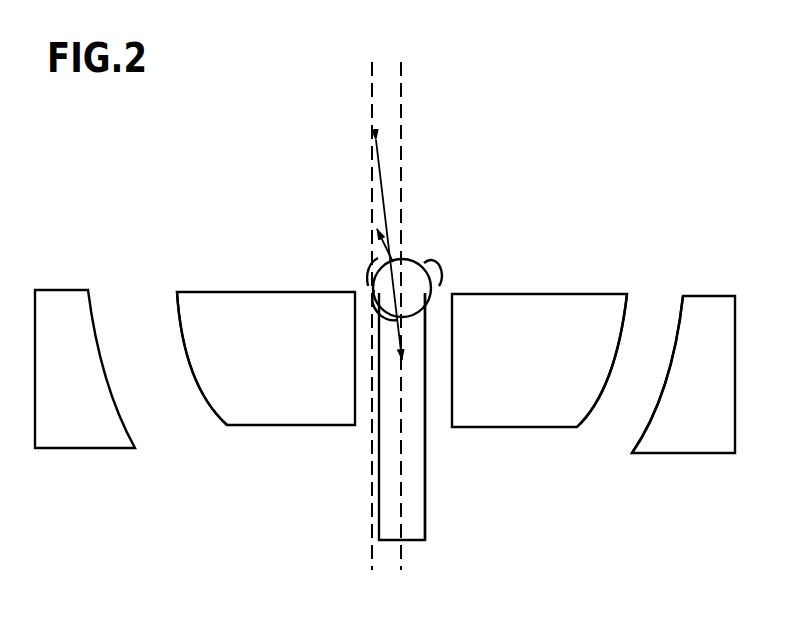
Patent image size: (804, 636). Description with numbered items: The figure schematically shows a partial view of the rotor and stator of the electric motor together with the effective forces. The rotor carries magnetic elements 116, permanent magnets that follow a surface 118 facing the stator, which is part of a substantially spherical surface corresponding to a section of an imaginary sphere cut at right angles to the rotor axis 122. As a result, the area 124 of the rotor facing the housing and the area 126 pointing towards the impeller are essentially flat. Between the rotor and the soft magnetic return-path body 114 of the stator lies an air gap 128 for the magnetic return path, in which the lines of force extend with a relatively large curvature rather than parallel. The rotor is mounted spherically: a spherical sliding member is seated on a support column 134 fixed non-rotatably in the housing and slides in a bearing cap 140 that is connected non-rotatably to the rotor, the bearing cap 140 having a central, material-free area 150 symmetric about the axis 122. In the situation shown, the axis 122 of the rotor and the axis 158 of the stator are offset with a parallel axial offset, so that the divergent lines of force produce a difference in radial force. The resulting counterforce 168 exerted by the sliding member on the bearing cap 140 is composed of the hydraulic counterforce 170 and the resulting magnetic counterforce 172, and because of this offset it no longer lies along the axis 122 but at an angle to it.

The return-path body 114 is at (712, 437).
The magnetic element 116 is at (527, 400).
The surface 118 is at (627, 318).
The axis 122 is at (402, 555).
The area 124 is at (310, 427).
The area 126 is at (196, 300).
The air gap 128 is at (638, 408).
The support column 134 is at (415, 477).
The bearing cap 140 is at (366, 270).
The central, material-free area 150 is at (374, 258).
The axis 158 is at (372, 100).
The resulting counterforce 168 is at (376, 294).
The hydraulic counterforce 170 is at (403, 312).
The resulting magnetic counterforce 172 is at (373, 185).